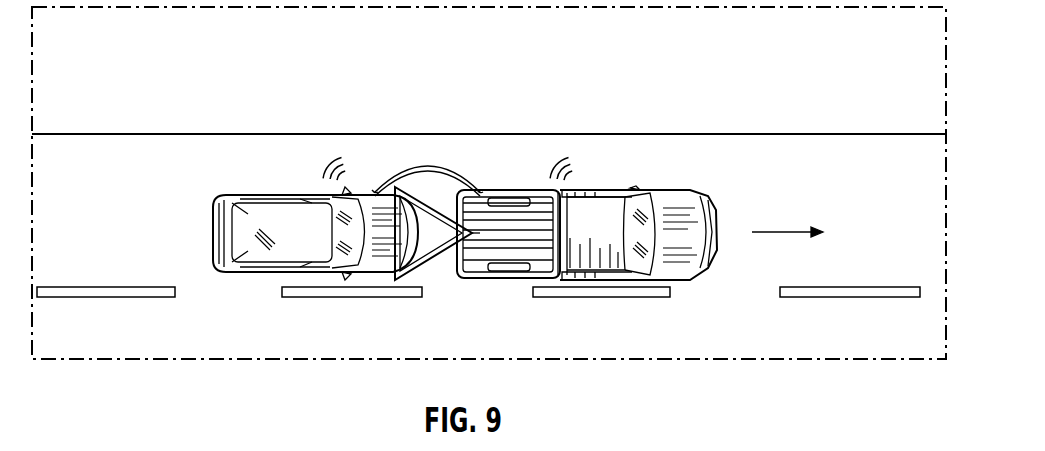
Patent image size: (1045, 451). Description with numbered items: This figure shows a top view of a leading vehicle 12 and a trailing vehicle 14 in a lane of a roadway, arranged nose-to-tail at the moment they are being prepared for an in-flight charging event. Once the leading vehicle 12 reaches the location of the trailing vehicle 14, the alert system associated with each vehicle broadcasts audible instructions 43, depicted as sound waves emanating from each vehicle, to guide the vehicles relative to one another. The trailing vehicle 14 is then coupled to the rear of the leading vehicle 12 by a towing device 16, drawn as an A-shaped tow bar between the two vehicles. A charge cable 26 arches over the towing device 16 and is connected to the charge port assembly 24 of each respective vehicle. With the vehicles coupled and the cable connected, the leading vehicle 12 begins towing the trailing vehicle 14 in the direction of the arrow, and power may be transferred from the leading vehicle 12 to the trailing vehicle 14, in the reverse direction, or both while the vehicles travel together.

The leading vehicle 12 is at (674, 258).
The trailing vehicle 14 is at (287, 248).
The towing device 16 is at (430, 272).
The charge port assembly 24 is at (374, 190).
The charge cable 26 is at (432, 168).
The audible instructions 43 is at (342, 151).